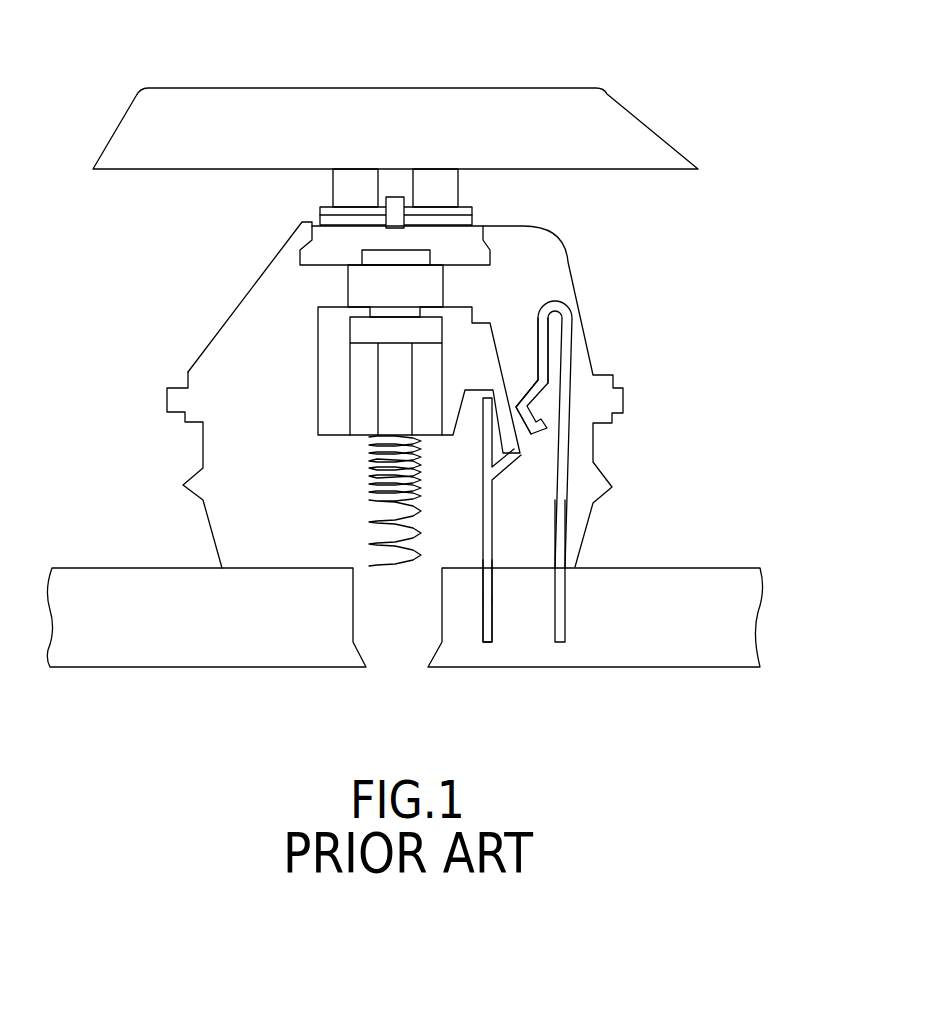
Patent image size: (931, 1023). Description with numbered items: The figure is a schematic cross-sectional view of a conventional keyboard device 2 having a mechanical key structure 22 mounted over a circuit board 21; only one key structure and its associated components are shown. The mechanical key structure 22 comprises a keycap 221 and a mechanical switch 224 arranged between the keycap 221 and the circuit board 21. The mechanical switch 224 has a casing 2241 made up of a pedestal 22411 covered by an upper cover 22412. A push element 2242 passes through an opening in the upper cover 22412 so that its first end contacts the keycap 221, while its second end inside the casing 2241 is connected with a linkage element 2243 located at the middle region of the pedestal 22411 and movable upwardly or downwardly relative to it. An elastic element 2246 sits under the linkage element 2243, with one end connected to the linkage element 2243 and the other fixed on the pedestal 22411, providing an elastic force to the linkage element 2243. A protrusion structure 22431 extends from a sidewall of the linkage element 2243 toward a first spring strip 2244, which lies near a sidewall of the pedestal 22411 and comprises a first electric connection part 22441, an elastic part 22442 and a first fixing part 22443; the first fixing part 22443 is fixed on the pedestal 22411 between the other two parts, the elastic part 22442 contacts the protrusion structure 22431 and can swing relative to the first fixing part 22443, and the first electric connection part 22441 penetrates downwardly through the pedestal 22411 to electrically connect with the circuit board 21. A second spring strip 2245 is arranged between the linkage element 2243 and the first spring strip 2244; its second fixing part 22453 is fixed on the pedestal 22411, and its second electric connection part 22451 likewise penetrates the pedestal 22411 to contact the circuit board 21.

The keyboard device 2 is at (265, 45).
The circuit board 21 is at (142, 588).
The mechanical key structure 22 is at (680, 121).
The keycap 221 is at (503, 86).
The mechanical switch 224 is at (622, 251).
The casing 2241 is at (188, 358).
The pedestal 22411 is at (228, 547).
The upper cover 22412 is at (255, 310).
The push element 2242 is at (377, 287).
The linkage element 2243 is at (460, 322).
The first spring strip 2244 is at (560, 490).
The protrusion structure 22431 is at (505, 407).
The first electric connection part 22441 is at (562, 627).
The elastic part 22442 is at (537, 388).
The first fixing part 22443 is at (560, 567).
The second spring strip 2245 is at (482, 510).
The second electric connection part 22451 is at (487, 627).
The second fixing part 22453 is at (490, 570).
The elastic element 2246 is at (375, 535).